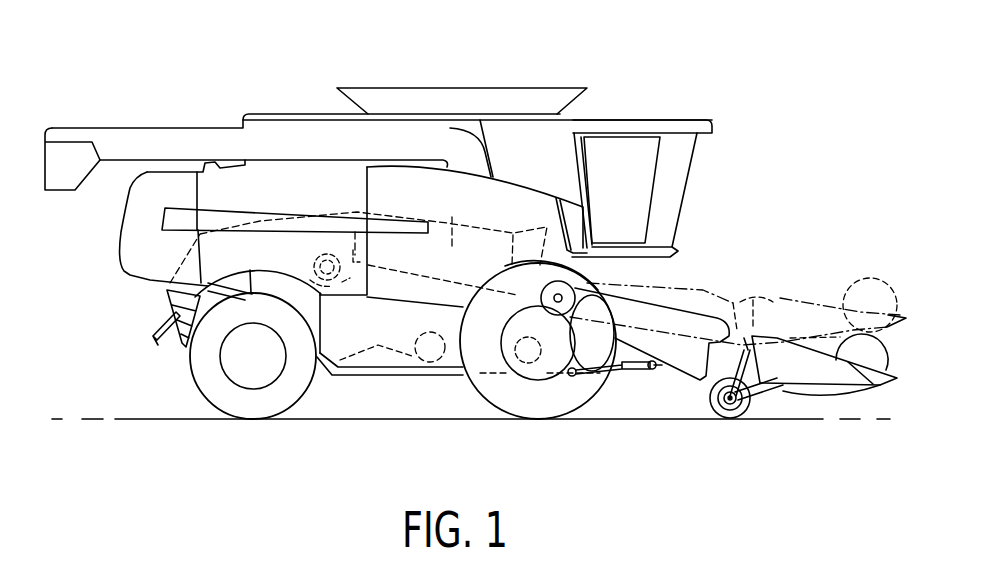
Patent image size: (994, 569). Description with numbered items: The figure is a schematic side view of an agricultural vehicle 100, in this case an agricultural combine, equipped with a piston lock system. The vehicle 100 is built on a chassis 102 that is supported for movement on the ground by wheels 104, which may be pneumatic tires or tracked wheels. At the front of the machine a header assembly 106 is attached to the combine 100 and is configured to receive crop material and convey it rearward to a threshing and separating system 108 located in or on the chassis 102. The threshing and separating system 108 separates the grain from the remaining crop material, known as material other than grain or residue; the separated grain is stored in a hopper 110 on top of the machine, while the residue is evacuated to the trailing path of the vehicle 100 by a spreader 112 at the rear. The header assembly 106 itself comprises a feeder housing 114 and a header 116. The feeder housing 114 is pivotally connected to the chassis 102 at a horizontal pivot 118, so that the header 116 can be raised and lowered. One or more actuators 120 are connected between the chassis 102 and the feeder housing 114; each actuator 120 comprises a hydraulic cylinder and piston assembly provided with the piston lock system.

The agricultural vehicle 100 is at (413, 42).
The chassis 102 is at (420, 372).
The wheels 104 is at (255, 400).
The header assembly 106 is at (738, 338).
The threshing and separating system 108 is at (457, 212).
The hopper 110 is at (513, 102).
The spreader 112 is at (177, 332).
The feeder housing 114 is at (688, 327).
The header 116 is at (802, 367).
The horizontal pivot 118 is at (600, 300).
The actuators 120 is at (617, 378).